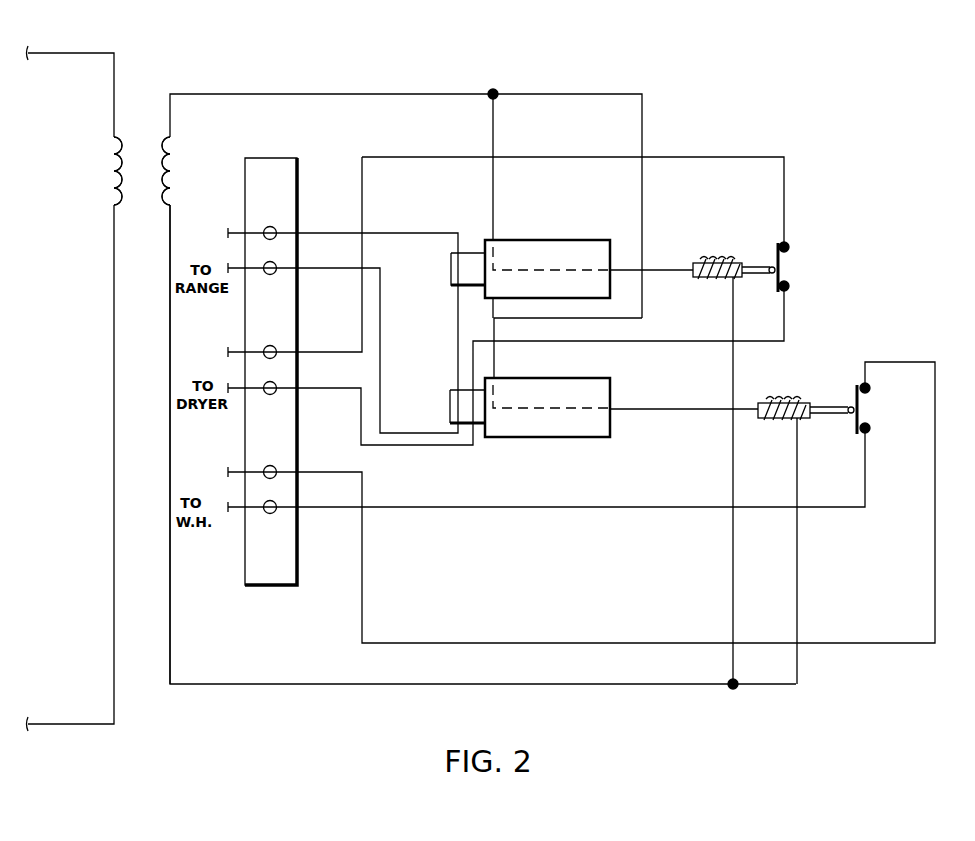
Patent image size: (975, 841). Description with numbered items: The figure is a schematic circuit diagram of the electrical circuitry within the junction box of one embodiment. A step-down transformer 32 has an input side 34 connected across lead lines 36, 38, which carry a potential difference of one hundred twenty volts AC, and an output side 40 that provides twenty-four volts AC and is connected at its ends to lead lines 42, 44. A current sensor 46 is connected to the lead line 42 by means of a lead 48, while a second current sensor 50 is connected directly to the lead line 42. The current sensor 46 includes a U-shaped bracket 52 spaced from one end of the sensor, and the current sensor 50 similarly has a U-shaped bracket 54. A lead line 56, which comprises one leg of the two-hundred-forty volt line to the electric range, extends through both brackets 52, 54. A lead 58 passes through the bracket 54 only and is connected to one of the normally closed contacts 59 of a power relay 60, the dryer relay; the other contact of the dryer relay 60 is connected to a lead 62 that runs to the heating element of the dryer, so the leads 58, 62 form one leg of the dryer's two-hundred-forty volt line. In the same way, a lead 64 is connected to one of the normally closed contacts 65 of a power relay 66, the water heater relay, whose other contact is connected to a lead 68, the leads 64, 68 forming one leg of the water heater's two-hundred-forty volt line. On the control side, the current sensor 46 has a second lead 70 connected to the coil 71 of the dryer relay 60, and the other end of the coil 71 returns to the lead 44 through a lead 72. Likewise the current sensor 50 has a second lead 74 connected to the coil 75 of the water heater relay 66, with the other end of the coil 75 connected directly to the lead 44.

The step-down transformer 32 is at (98, 193).
The input side 34 is at (114, 156).
The lead line 36 is at (62, 53).
The lead line 38 is at (62, 724).
The output side 40 is at (170, 157).
The lead line 42 is at (277, 96).
The lead line 44 is at (170, 305).
The current sensor 46 is at (563, 240).
The lead 48 is at (494, 191).
The second current sensor 50 is at (550, 378).
The U-shaped bracket 52 is at (451, 272).
The U-shaped bracket 54 is at (450, 405).
The lead line 56 is at (458, 320).
The lead 58 is at (450, 447).
The normally closed contacts 59 is at (790, 243).
The dryer relay 60 is at (819, 272).
The lead 62 is at (726, 157).
The lead 64 is at (440, 643).
The normally closed contacts 65 is at (856, 434).
The water heater relay 66 is at (893, 418).
The lead 68 is at (490, 507).
The second lead 70 is at (680, 270).
The coil 71 is at (712, 262).
The lead 72 is at (732, 368).
The second lead 74 is at (668, 410).
The coil 75 is at (788, 403).